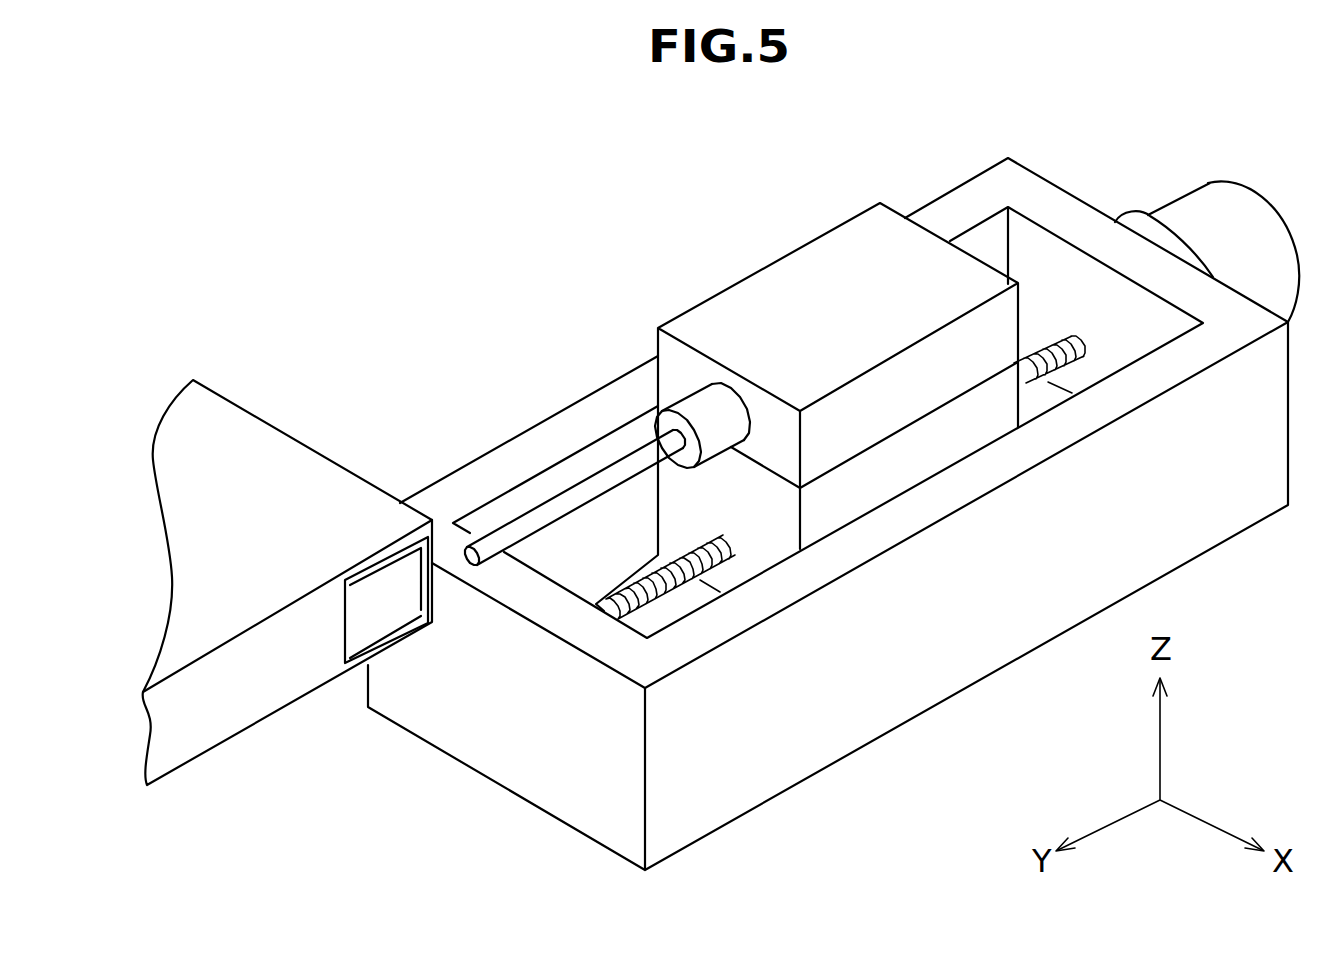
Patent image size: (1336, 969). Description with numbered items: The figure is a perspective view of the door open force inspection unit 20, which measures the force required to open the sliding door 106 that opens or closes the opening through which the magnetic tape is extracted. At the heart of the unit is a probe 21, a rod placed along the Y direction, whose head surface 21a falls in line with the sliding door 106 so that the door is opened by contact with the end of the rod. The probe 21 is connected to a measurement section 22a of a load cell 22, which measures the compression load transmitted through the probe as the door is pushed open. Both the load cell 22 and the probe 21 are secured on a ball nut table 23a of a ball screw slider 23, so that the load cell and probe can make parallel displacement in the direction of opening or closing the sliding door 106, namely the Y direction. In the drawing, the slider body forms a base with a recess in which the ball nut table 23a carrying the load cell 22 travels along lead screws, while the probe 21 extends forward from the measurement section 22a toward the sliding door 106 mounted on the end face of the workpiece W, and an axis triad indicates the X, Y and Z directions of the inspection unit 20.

The door open force inspection unit 20 is at (607, 228).
The probe 21 is at (567, 502).
The head surface 21a is at (455, 556).
The load cell 22 is at (816, 282).
The measurement section 22a is at (702, 407).
The ball screw slider 23 is at (852, 756).
The ball nut table 23a is at (957, 430).
The sliding door 106 is at (383, 615).
The workpiece W is at (283, 433).